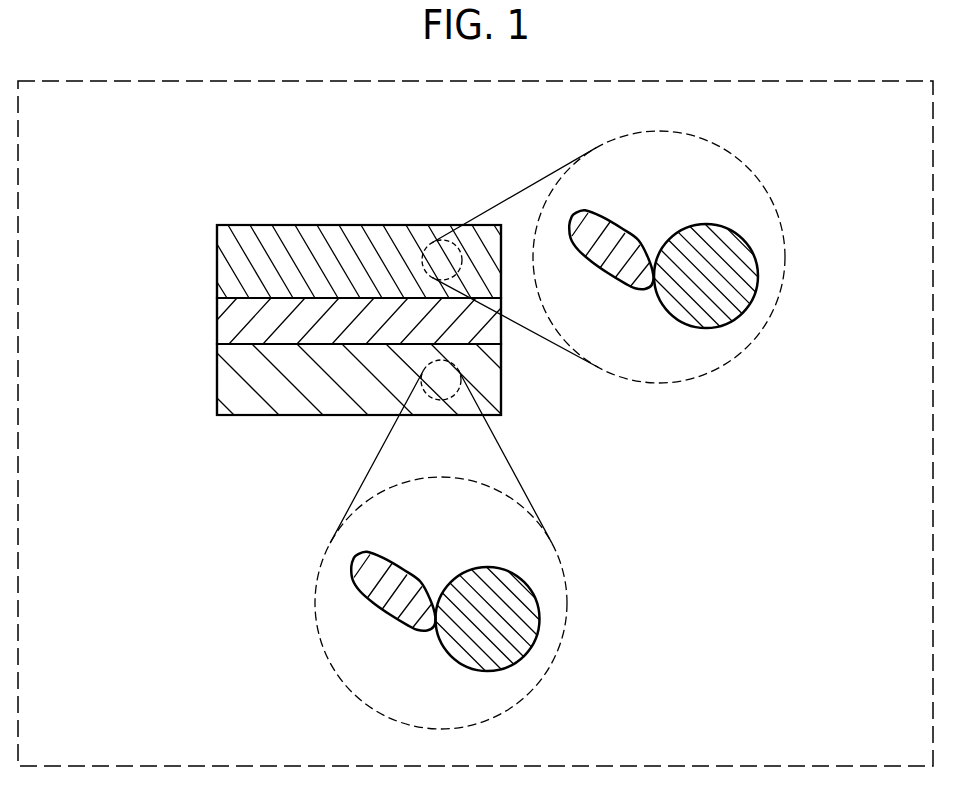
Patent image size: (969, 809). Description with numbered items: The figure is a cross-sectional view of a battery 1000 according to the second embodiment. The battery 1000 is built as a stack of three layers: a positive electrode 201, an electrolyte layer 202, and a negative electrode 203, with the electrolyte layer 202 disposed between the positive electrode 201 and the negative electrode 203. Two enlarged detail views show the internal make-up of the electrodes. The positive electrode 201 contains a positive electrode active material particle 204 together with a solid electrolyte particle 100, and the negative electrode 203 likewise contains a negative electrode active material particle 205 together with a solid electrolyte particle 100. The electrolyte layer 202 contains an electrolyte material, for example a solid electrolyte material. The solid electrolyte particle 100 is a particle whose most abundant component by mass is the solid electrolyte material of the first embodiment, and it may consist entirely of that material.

The battery 1000 is at (328, 172).
The positive electrode 201 is at (236, 247).
The electrolyte layer 202 is at (234, 317).
The negative electrode 203 is at (234, 384).
The solid electrolyte particle 100 is at (627, 270).
The positive electrode active material particle 204 is at (729, 272).
The negative electrode active material particle 205 is at (513, 607).